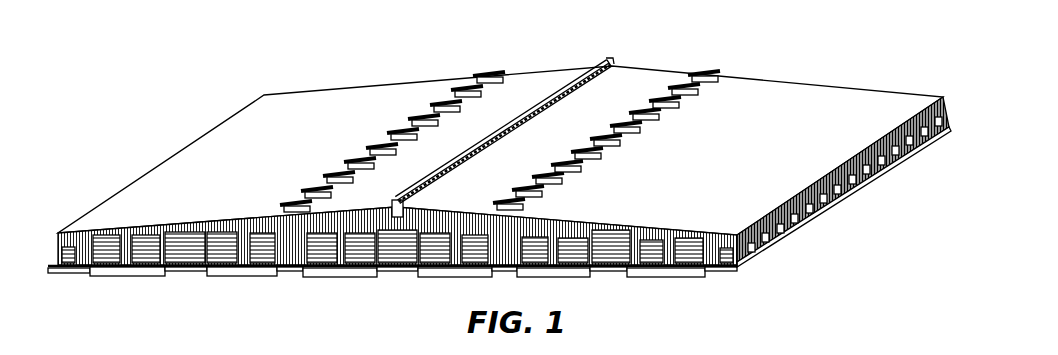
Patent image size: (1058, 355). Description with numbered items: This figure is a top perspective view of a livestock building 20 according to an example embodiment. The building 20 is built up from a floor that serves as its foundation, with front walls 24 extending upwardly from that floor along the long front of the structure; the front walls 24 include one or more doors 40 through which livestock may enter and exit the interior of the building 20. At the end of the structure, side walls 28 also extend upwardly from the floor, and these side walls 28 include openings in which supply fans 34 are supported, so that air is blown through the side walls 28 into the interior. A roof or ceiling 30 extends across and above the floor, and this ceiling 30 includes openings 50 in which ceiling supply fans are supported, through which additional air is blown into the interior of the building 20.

The livestock building 20 is at (499, 172).
The front walls 24 is at (243, 260).
The side walls 28 is at (844, 200).
The roof or ceiling 30 is at (793, 112).
The supply fans 34 is at (915, 140).
The doors 40 is at (261, 257).
The openings 50 is at (703, 102).